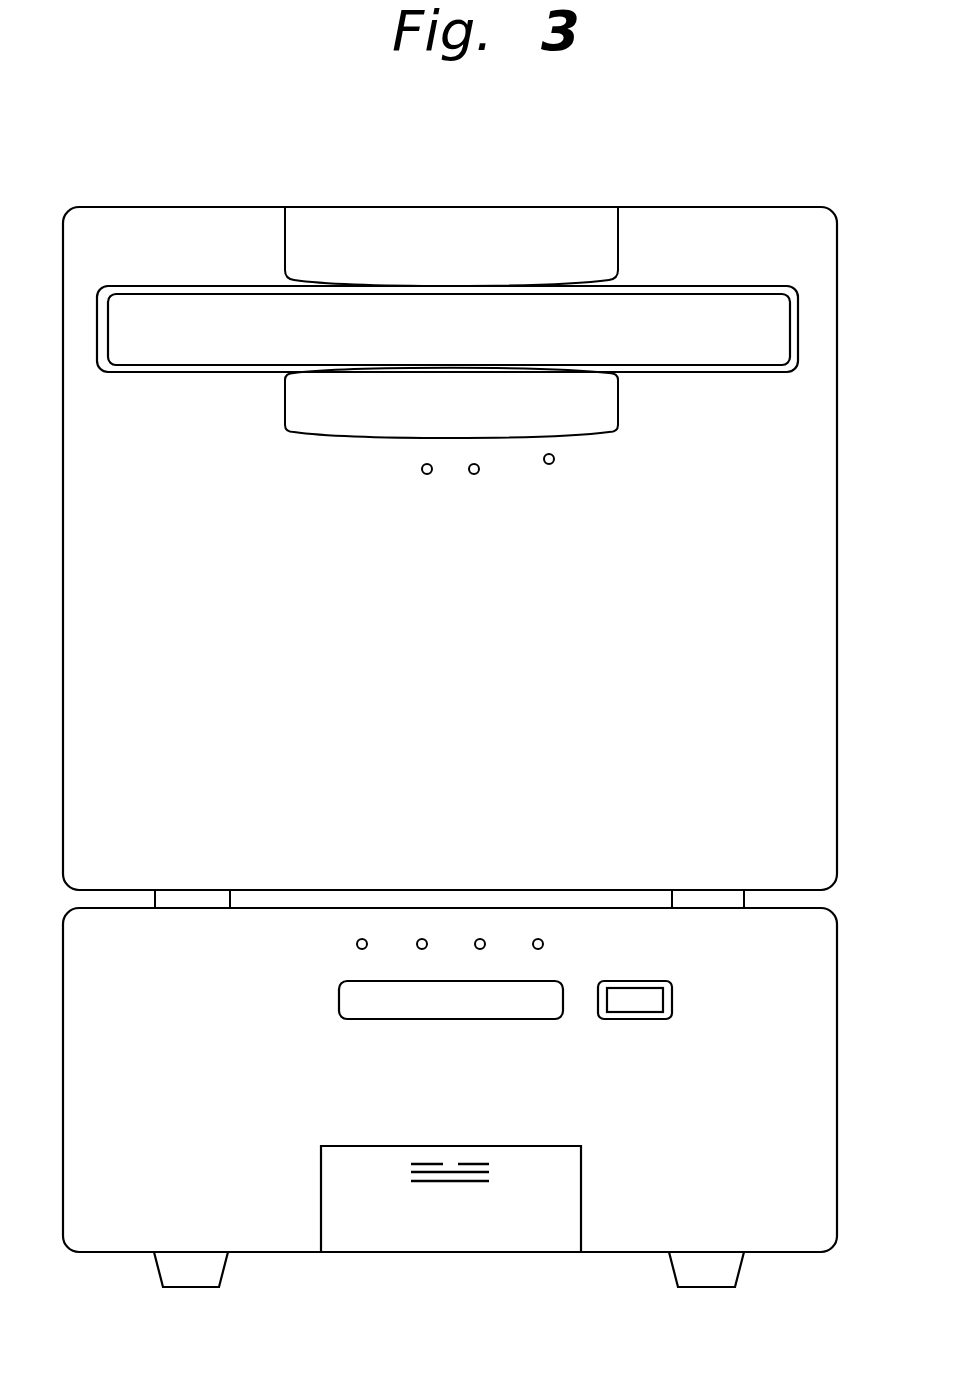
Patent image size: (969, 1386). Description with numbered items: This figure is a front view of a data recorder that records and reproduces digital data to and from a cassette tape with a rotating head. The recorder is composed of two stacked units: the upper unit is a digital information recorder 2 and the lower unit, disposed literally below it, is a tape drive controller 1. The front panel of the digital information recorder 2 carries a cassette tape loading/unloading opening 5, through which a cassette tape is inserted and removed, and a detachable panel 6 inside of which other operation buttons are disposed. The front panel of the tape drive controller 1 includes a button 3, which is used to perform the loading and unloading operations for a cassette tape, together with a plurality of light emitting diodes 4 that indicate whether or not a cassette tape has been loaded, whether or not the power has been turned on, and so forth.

The tape drive controller 1 is at (613, 1253).
The digital information recorder 2 is at (639, 207).
The button 3 is at (648, 1004).
The light emitting diodes 4 is at (455, 955).
The cassette tape loading/unloading opening 5 is at (676, 337).
The detachable panel 6 is at (468, 1218).